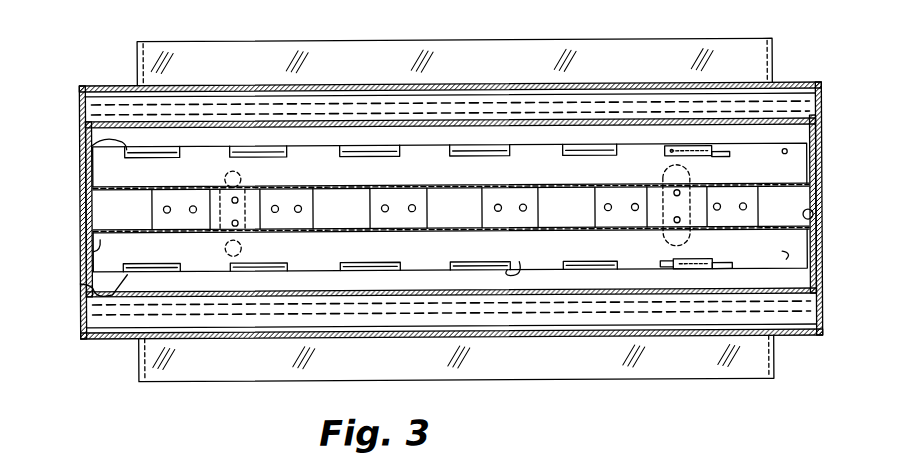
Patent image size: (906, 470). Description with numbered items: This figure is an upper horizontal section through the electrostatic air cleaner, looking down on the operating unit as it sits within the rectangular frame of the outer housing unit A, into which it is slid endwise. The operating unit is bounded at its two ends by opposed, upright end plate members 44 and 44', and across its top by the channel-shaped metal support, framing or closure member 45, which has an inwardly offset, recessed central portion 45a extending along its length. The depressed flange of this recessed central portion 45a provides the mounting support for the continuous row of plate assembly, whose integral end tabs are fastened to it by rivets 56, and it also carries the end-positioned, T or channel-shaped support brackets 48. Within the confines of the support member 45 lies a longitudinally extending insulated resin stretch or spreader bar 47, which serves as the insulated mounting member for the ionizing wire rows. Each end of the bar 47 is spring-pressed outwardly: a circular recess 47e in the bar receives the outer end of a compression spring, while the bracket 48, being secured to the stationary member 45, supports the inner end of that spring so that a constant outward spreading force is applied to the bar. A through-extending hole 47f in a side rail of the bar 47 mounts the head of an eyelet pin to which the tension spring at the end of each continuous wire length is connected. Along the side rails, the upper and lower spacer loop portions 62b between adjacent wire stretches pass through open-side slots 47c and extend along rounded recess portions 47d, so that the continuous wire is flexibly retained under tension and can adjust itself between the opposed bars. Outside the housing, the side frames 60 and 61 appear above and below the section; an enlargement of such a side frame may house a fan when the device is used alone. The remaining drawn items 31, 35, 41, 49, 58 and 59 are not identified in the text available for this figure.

The clip 31 is at (665, 158).
The housing bottom wall 35 is at (822, 323).
The housing 41 is at (80, 303).
The end plate member 44 is at (423, 208).
The end plate member 44' is at (833, 212).
The upper metal support member 45 is at (222, 127).
The recessed central portion 45a is at (93, 250).
The insulated wire row mounting bar 47 is at (103, 172).
The open-side slot 47c is at (92, 144).
The rounded recess portion 47d is at (80, 282).
The circular recess 47e is at (225, 250).
The through-extending hole 47f is at (765, 253).
The support bracket 48 is at (241, 249).
The guide element 49 is at (231, 198).
The rivets 56 is at (298, 205).
The lower heating element 58 is at (389, 323).
The upper heating element 59 is at (358, 103).
The side frame 60 is at (220, 382).
The side frame 61 is at (212, 42).
The spacer loop portion 62b is at (357, 263).
The outer housing unit A is at (795, 82).